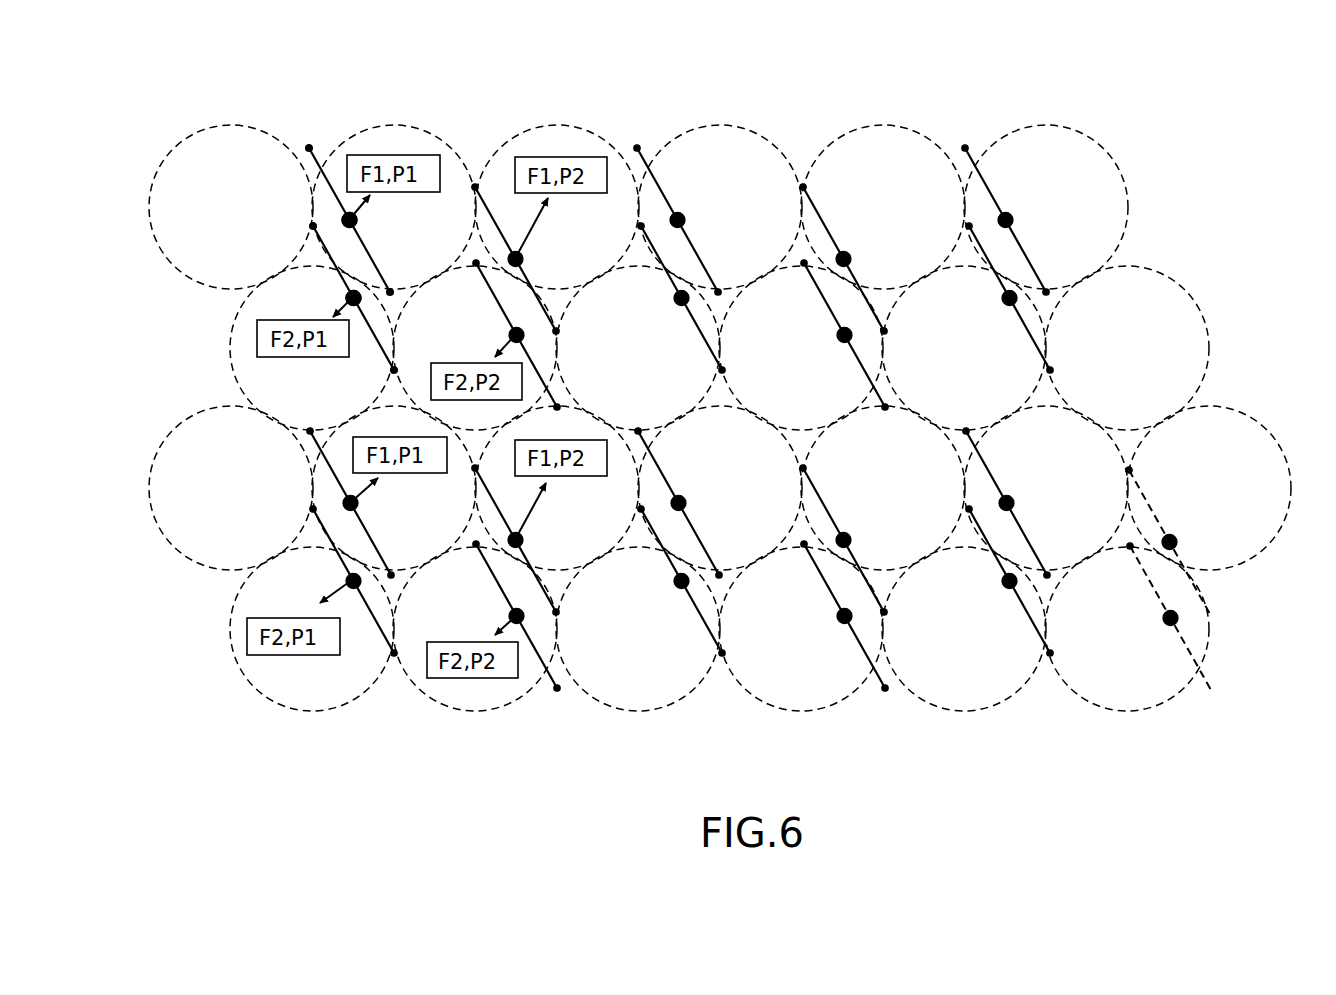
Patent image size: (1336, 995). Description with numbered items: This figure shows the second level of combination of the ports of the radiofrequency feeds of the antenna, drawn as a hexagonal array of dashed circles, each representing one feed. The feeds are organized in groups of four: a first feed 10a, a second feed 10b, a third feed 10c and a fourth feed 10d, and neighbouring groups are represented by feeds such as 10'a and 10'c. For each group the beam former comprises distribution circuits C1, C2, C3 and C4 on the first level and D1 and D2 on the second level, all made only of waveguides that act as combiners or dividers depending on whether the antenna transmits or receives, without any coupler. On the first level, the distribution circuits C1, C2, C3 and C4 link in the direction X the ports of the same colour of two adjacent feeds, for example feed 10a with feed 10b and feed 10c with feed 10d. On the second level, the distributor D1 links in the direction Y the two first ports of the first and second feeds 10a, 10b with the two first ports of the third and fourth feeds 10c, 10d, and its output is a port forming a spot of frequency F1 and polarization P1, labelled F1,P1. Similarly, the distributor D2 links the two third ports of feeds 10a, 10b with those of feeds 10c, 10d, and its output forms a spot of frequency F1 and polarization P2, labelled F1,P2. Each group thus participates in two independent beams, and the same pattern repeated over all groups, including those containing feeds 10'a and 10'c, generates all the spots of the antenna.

The first radiofrequency feed 10a is at (238, 147).
The second radiofrequency feed 10b is at (398, 138).
The third radiofrequency feed 10c is at (260, 382).
The fourth radiofrequency feed 10d is at (477, 415).
The first radiofrequency feed of an adjacent group 10'a is at (557, 164).
The third radiofrequency feed of an adjacent group 10'c is at (638, 241).
The first distribution circuit C1 is at (309, 147).
The first distribution circuit C2 is at (312, 227).
The first distribution circuit C3 is at (392, 291).
The first distribution circuit C4 is at (395, 368).
The second distribution circuit D1 is at (353, 221).
The second distribution circuit D2 is at (356, 304).